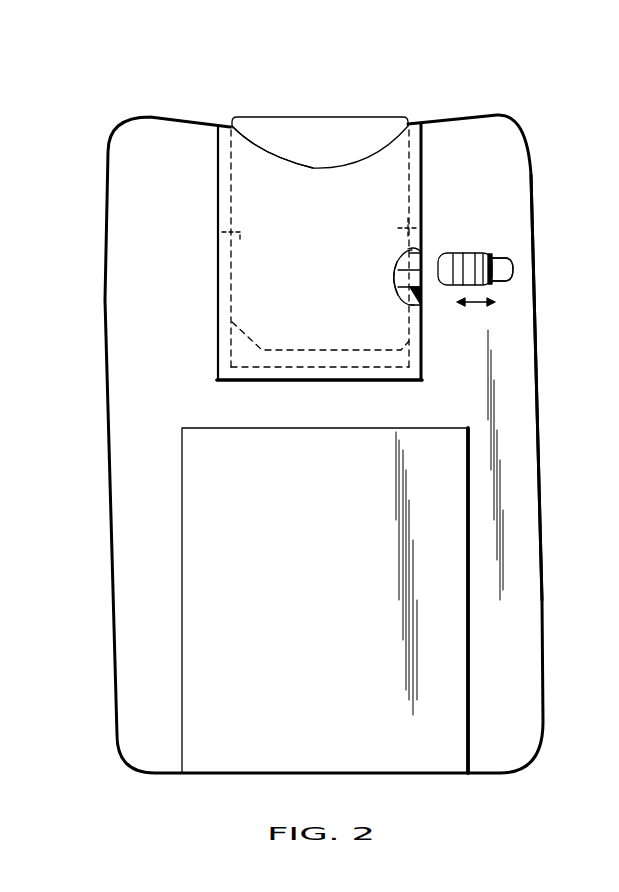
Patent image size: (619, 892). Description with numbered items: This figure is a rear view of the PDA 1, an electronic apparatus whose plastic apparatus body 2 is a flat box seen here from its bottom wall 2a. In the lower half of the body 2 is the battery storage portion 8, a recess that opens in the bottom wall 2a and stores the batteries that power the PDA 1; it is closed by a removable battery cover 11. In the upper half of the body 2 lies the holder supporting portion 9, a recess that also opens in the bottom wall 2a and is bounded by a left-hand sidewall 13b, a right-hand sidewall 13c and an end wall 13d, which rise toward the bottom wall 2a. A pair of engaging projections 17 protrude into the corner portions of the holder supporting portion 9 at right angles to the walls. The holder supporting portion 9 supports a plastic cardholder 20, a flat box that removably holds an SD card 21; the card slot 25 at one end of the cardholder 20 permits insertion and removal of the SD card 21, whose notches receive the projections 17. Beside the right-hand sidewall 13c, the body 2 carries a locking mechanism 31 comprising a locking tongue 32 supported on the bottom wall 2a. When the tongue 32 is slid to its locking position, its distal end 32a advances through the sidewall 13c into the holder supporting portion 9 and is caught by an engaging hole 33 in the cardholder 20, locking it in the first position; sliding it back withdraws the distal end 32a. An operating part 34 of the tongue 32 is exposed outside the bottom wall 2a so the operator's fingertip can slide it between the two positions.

The PDA 1 is at (516, 88).
The apparatus body 2 is at (120, 299).
The bottom wall 2a is at (524, 394).
The battery storage portion 8 is at (196, 598).
The holder supporting portion 9 is at (328, 372).
The battery cover 11 is at (455, 640).
The left-hand sidewall 13b is at (230, 176).
The right-hand sidewall 13c is at (413, 168).
The end wall 13d is at (275, 383).
The engaging projection 17 is at (228, 232).
The cardholder 20 is at (252, 297).
The SD card 21 is at (362, 125).
The card slot 25 is at (272, 162).
The locking mechanism 31 is at (478, 247).
The locking tongue 32 is at (432, 258).
The distal end 32a is at (398, 276).
The engaging hole 33 is at (404, 258).
The operating part 34 is at (480, 270).